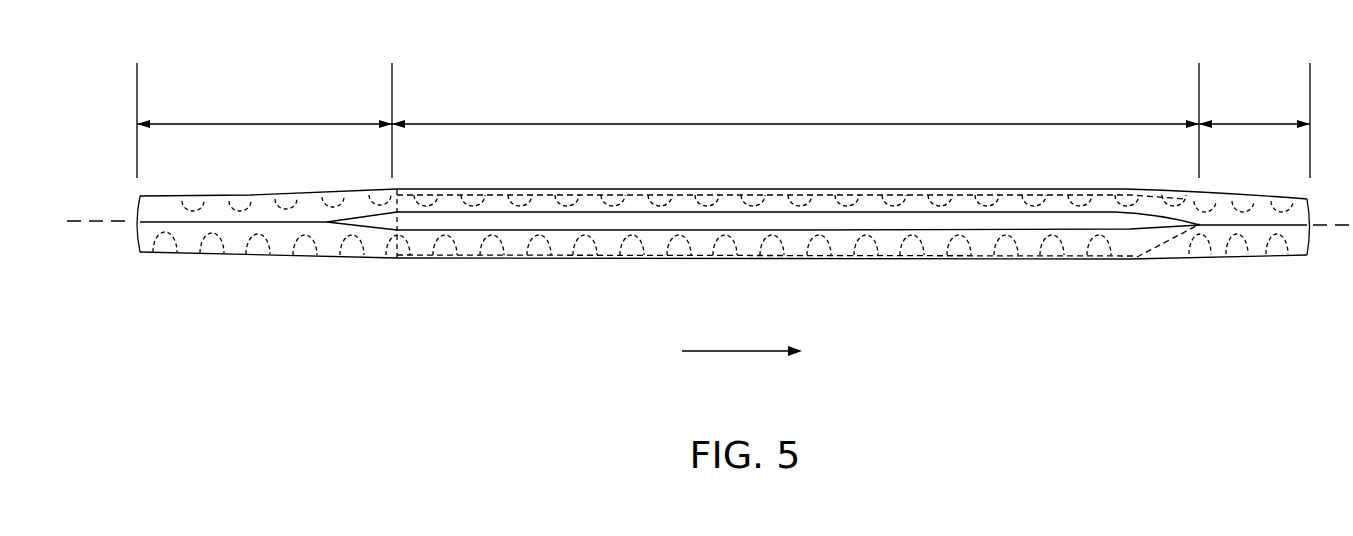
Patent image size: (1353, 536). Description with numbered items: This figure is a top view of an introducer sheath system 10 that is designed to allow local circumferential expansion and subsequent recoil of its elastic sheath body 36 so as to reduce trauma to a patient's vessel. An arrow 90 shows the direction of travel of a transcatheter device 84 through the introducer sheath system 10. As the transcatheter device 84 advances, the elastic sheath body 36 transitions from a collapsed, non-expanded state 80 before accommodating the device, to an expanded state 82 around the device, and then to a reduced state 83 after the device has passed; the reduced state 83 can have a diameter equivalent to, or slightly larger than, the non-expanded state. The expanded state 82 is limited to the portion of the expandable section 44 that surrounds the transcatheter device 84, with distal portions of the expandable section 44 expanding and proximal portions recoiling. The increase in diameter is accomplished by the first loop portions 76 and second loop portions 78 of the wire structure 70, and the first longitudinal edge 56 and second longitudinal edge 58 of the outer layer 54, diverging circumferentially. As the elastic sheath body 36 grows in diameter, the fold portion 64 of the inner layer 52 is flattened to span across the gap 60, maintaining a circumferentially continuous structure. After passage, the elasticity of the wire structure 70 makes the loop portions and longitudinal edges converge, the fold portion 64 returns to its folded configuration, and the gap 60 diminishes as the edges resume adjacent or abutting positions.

The introducer sheath system 10 is at (929, 48).
The elastic sheath body 36 is at (240, 258).
The outer layer 54 is at (328, 258).
The expandable section 44 is at (500, 262).
The wire structure 70 is at (615, 243).
The first loop portions 76 is at (723, 237).
The first longitudinal edge 56 is at (793, 231).
The fold portion 64 is at (978, 229).
The inner layer 52 is at (1043, 229).
The transcatheter device 84 is at (1142, 223).
The gap 60 is at (1258, 224).
The second loop portions 78 is at (565, 207).
The second longitudinal edge 58 is at (632, 212).
The non-expanded state 80 is at (1257, 122).
The expanded state 82 is at (778, 122).
The reduced state 83 is at (264, 122).
The arrow 90 is at (742, 352).